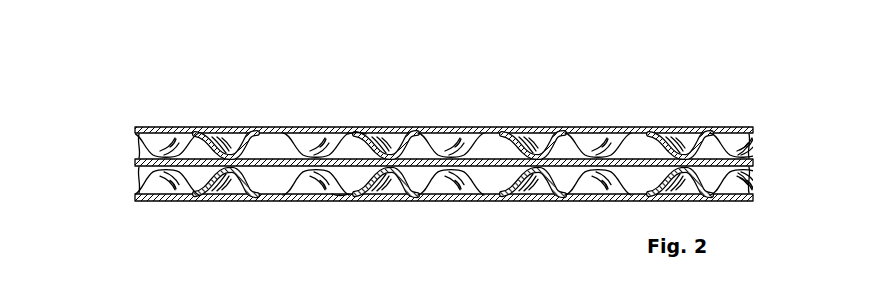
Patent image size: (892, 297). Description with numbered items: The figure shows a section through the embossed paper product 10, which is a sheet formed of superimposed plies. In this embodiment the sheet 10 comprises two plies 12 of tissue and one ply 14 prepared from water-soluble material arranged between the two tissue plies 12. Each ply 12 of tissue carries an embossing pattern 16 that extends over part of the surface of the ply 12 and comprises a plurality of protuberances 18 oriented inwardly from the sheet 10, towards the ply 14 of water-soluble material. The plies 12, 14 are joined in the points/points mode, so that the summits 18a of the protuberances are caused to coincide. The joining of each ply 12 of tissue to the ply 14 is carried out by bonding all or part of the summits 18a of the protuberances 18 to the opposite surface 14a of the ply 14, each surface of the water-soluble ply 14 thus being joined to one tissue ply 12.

The paper product 10 is at (325, 97).
The ply of tissue 12 is at (134, 129).
The ply of water-soluble material 14 is at (134, 162).
The opposite surface of the ply of water-soluble material 14a is at (360, 128).
The embossing pattern 16 is at (760, 146).
The protuberances 18 is at (410, 128).
The summits of the protuberances 18a is at (250, 128).